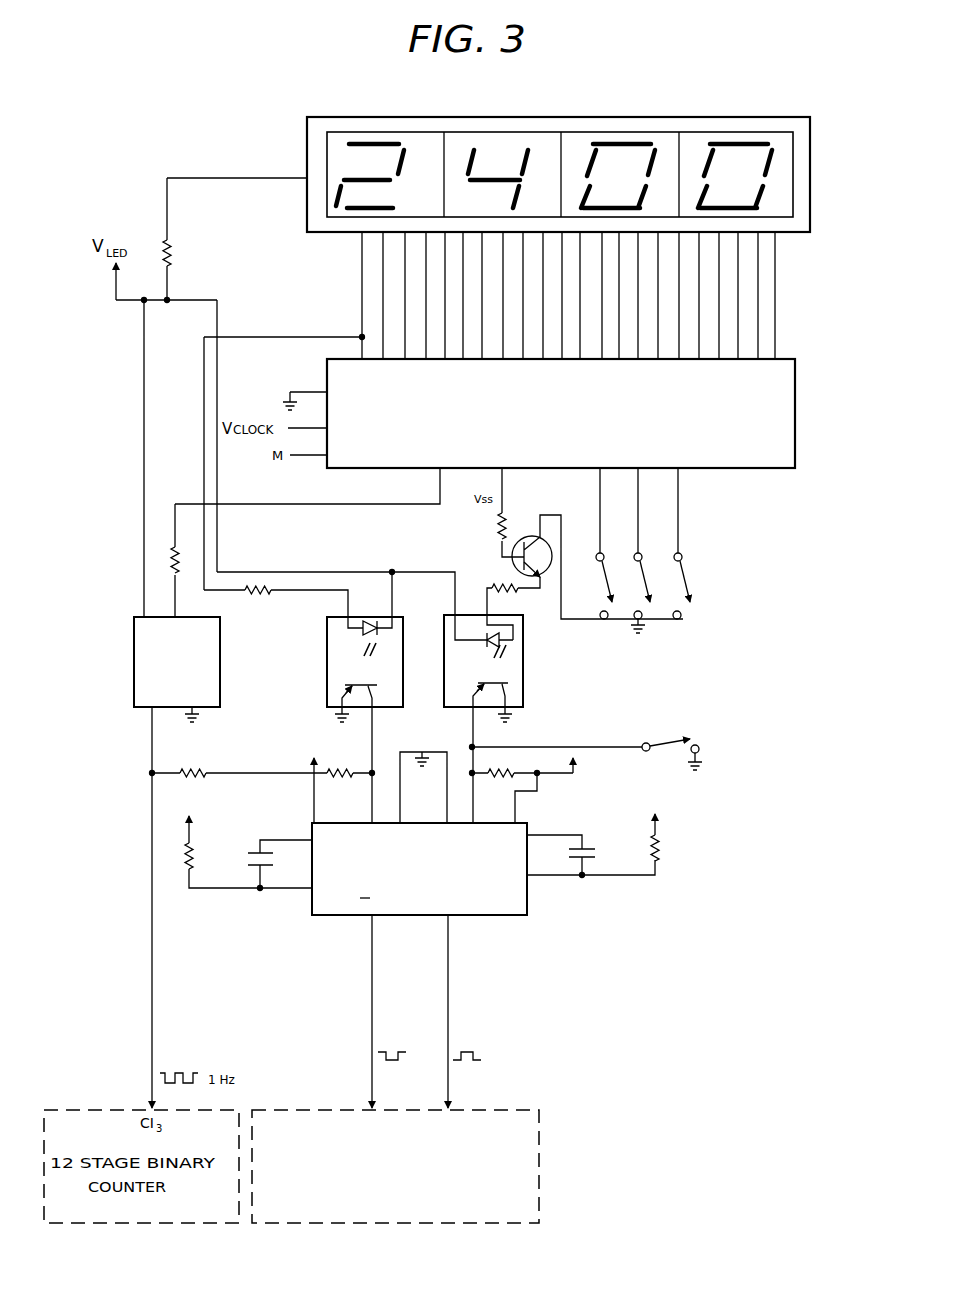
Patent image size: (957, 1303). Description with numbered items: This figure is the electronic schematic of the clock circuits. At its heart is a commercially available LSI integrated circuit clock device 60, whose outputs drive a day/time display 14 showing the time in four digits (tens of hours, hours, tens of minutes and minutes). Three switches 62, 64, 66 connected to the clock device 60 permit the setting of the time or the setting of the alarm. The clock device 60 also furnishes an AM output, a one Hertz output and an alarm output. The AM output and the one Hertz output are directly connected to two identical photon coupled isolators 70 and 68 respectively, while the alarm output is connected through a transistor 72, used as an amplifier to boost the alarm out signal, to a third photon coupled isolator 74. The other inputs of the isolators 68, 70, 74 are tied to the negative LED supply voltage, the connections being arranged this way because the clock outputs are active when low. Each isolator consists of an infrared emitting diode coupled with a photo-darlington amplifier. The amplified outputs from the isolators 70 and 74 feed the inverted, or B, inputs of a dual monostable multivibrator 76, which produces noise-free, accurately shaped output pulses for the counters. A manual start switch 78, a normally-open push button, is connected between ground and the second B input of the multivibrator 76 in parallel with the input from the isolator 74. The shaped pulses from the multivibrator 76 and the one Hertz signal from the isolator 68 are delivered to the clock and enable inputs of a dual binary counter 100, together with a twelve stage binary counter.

The day/time display 14 is at (810, 188).
The clock device 60 is at (795, 468).
The switch 62 is at (608, 566).
The switch 64 is at (646, 566).
The switch 66 is at (686, 566).
The photon coupled isolator 68 is at (221, 672).
The photon coupled isolator 70 is at (403, 700).
The transistor 72 is at (534, 536).
The photon coupled isolator 74 is at (523, 705).
The dual monostable multivibrator 76 is at (527, 912).
The manual start switch 78 is at (658, 743).
The dual binary counter 100 is at (567, 1150).